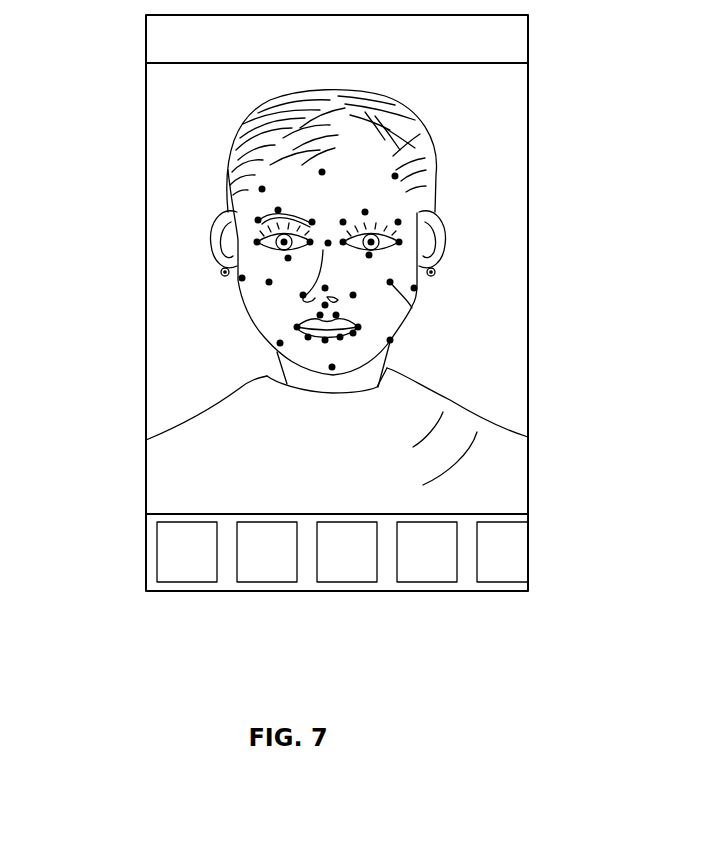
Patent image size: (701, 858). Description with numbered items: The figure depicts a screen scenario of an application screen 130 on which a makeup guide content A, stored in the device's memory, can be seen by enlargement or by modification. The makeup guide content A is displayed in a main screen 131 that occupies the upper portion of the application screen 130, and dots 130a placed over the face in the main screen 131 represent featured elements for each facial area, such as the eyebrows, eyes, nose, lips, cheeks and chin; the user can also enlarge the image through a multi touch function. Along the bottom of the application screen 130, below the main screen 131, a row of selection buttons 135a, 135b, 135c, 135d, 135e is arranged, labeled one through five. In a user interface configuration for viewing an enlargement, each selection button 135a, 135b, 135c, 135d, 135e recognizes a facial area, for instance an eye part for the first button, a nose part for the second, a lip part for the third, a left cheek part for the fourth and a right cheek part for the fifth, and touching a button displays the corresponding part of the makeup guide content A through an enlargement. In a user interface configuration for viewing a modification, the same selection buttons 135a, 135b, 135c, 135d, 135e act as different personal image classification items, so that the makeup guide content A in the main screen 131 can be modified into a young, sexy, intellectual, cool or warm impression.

The application screen 130 is at (125, 282).
The dots 130a is at (390, 340).
The main screen 131 is at (517, 382).
The selection button 135a is at (188, 575).
The selection button 135b is at (268, 575).
The selection button 135c is at (348, 575).
The selection button 135d is at (428, 575).
The selection button 135e is at (508, 575).
The makeup guide content A is at (352, 206).